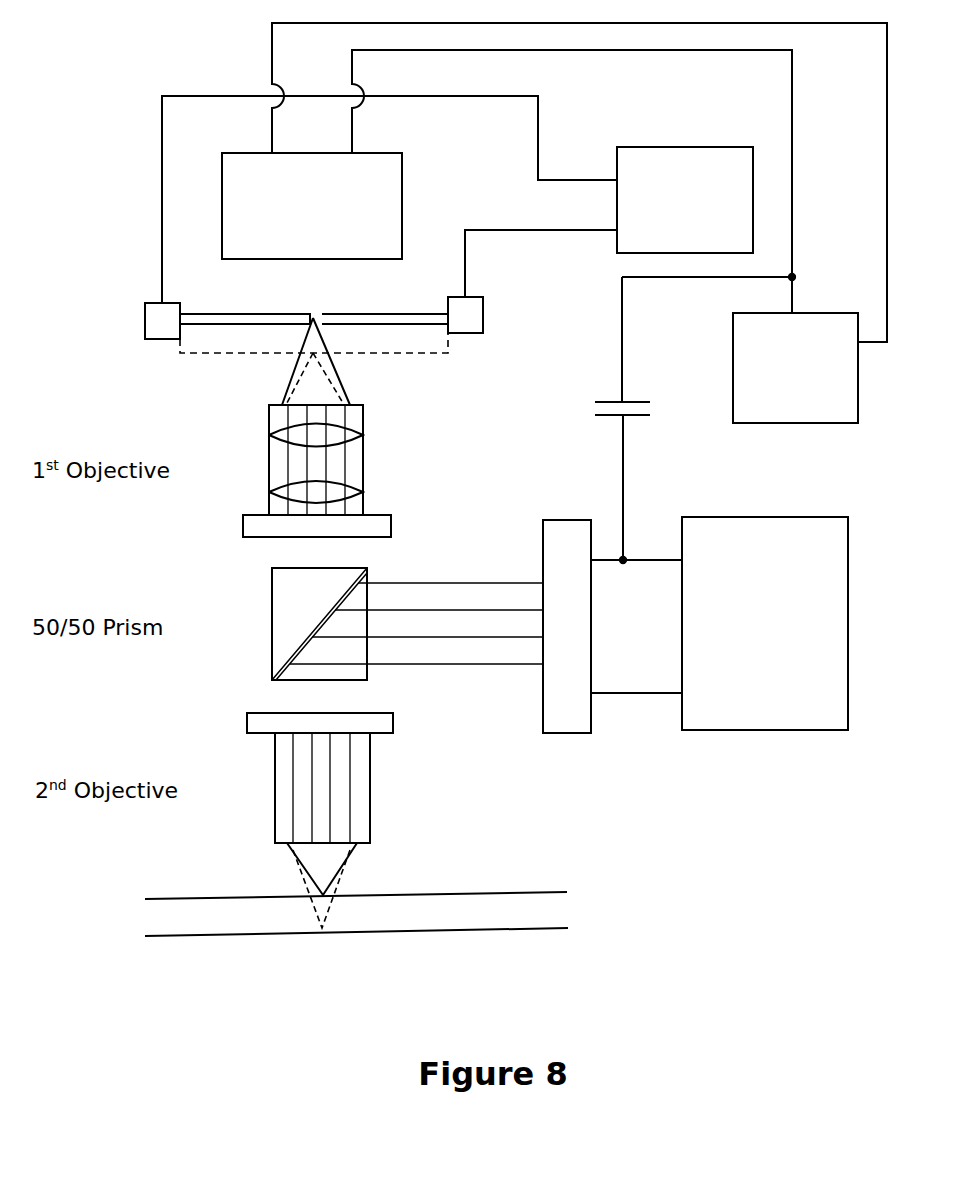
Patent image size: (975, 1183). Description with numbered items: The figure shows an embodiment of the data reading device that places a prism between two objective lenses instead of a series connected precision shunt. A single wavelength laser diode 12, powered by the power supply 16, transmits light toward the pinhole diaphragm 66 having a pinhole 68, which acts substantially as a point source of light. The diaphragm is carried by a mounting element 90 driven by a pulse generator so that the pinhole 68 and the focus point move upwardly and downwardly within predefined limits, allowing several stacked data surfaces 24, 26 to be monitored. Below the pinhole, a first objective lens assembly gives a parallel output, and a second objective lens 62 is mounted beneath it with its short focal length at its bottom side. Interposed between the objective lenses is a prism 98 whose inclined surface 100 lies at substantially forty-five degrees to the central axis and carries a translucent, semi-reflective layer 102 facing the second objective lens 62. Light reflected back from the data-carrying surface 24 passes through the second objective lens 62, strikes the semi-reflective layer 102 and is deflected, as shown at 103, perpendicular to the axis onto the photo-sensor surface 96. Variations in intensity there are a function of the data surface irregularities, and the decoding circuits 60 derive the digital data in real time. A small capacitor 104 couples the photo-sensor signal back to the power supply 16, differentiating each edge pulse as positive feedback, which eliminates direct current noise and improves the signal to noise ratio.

The single wavelength laser diode 12 is at (378, 205).
The power supply 16 is at (818, 410).
The capacitor 104 is at (637, 398).
The mounting element 90 is at (470, 313).
The pinhole diaphragm 66 is at (360, 316).
The pinhole 68 is at (310, 312).
The prism 98 is at (292, 616).
The inclined surface 100 is at (325, 592).
The semi-reflective layer 102 is at (327, 627).
The deflected light 103 is at (473, 595).
The photo-sensor surface 96 is at (578, 625).
The decoding circuits 60 is at (843, 573).
The second objective lens 62 is at (293, 788).
The data-carrying surface 24 is at (443, 893).
The data surface 26 is at (435, 931).